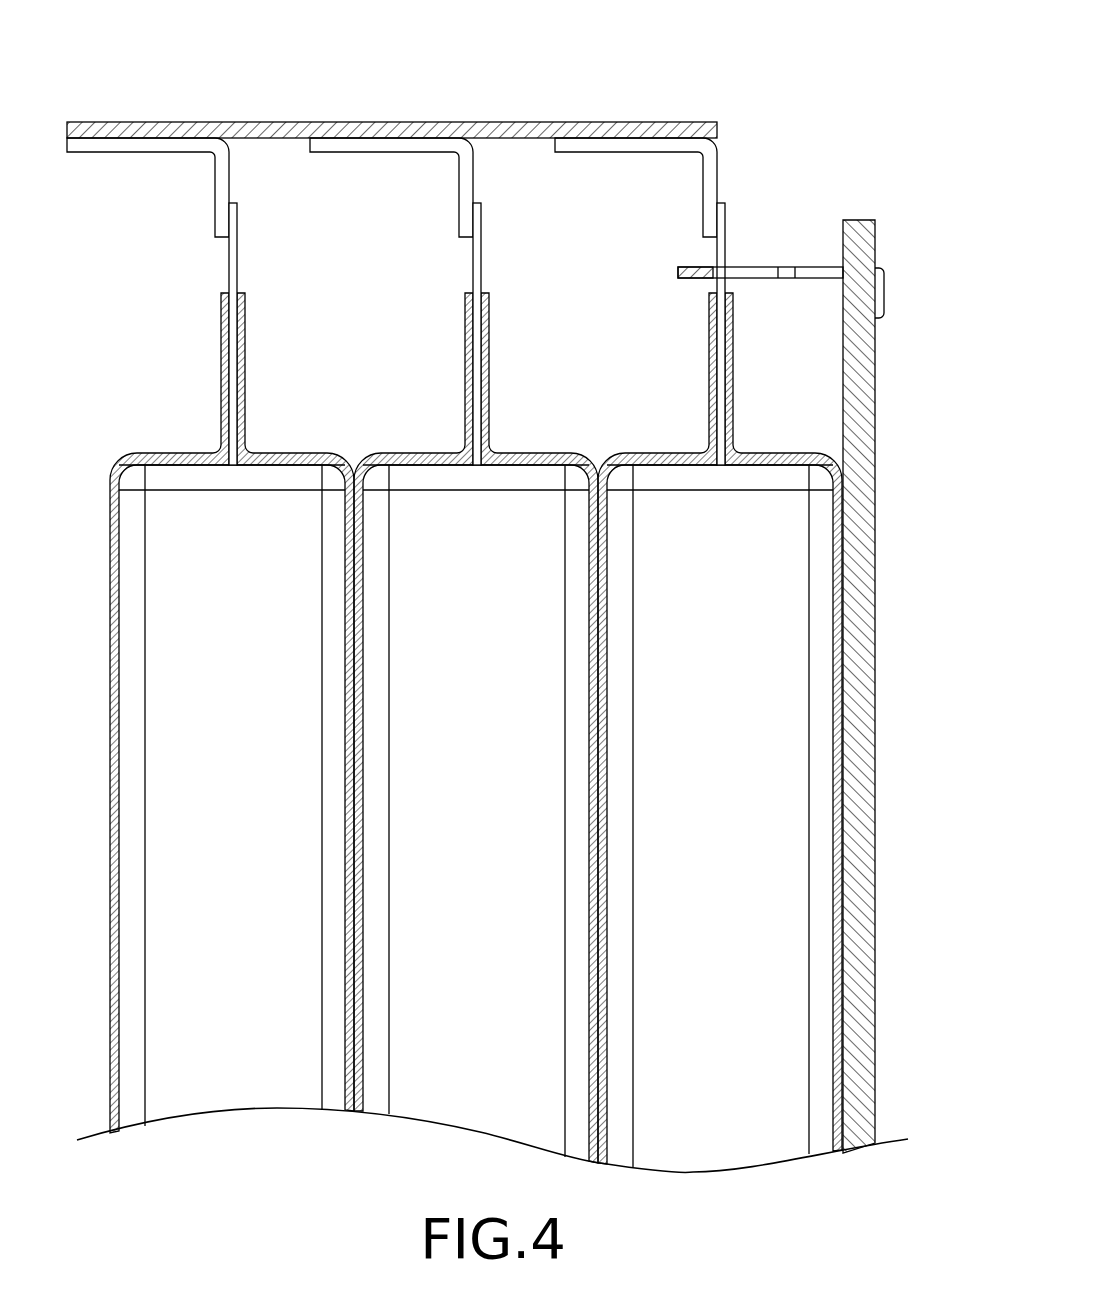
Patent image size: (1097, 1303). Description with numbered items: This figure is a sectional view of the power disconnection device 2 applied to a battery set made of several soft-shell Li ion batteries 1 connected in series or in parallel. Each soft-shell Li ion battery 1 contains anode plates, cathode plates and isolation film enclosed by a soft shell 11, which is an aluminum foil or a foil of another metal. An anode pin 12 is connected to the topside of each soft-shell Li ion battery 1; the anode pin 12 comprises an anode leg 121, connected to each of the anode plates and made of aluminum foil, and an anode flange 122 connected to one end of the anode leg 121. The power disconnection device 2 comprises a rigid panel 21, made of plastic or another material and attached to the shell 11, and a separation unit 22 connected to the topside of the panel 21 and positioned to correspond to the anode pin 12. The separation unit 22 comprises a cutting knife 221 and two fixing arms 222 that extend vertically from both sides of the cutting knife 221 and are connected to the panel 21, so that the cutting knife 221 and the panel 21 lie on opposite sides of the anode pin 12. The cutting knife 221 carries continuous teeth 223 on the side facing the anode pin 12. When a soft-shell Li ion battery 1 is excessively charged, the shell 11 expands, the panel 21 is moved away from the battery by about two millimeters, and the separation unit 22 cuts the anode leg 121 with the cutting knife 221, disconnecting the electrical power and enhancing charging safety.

The soft-shell Li ion battery 1 is at (790, 435).
The soft shell 11 is at (840, 528).
The anode pin 12 is at (673, 20).
The anode leg 121 is at (722, 227).
The anode flange 122 is at (628, 143).
The power disconnection device 2 is at (893, 998).
The panel 21 is at (862, 920).
The separation unit 22 is at (781, 258).
The cutting knife 221 is at (677, 271).
The fixing arms 222 is at (807, 270).
The continuous teeth 223 is at (713, 272).